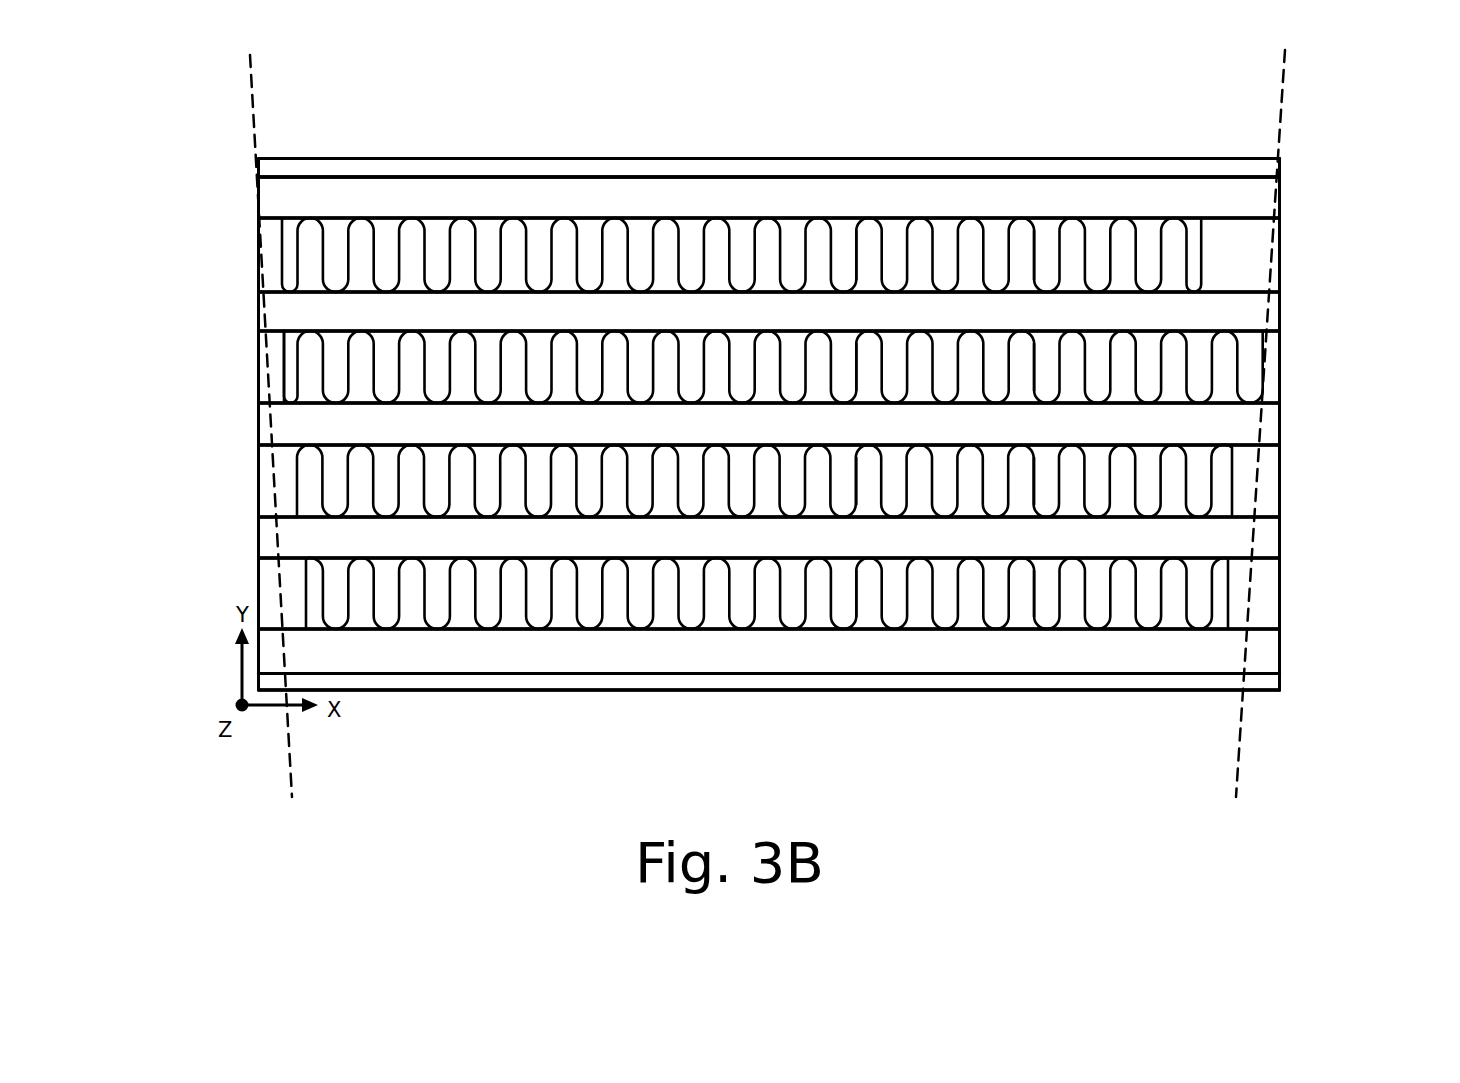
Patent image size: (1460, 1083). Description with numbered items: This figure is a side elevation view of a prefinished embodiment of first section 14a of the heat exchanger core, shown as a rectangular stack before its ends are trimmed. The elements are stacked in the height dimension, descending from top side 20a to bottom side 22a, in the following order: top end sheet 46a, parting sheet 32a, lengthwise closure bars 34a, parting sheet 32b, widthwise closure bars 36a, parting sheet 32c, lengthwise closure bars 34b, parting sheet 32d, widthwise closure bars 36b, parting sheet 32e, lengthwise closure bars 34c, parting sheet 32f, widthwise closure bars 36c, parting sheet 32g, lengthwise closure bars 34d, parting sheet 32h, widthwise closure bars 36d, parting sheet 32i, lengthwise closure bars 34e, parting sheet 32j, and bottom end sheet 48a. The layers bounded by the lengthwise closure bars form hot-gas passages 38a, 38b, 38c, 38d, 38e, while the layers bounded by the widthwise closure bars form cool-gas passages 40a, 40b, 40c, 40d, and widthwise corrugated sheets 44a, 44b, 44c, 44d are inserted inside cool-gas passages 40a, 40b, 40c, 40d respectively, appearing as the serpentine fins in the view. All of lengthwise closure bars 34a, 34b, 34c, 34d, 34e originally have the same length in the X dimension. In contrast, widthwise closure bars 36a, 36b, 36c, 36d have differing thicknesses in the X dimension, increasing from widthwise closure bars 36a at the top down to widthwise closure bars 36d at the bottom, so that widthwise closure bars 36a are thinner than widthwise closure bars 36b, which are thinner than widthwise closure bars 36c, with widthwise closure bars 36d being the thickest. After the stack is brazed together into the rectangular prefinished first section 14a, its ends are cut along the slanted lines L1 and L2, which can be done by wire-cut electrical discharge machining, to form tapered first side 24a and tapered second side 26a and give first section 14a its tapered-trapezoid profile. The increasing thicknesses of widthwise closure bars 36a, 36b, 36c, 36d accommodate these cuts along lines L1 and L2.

The first section 14a is at (235, 232).
The top side 20a is at (558, 158).
The bottom side 22a is at (715, 692).
The first side 24a is at (1280, 312).
The second side 26a is at (268, 368).
The parting sheet 32a is at (1280, 177).
The parting sheet 32b is at (1280, 220).
The parting sheet 32c is at (1280, 292).
The parting sheet 32d is at (1280, 333).
The parting sheet 32e is at (1280, 403).
The parting sheet 32f is at (1280, 445).
The parting sheet 32g is at (1280, 517).
The parting sheet 32h is at (1280, 560).
The parting sheet 32i is at (1280, 629).
The parting sheet 32j is at (1280, 673).
The lengthwise closure bars 34a is at (537, 209).
The lengthwise closure bars 34b is at (537, 323).
The lengthwise closure bars 34c is at (537, 437).
The lengthwise closure bars 34d is at (537, 550).
The lengthwise closure bars 34e is at (537, 666).
The widthwise closure bars 36a is at (270, 240).
The widthwise closure bars 36b is at (282, 350).
The widthwise closure bars 36c is at (282, 479).
The widthwise closure bars 36d is at (292, 578).
The hot-gas passage 38a is at (680, 205).
The hot-gas passage 38b is at (680, 319).
The hot-gas passage 38c is at (680, 433).
The hot-gas passage 38d is at (680, 546).
The hot-gas passage 38e is at (680, 662).
The cool-gas passage 40a is at (847, 237).
The cool-gas passage 40b is at (845, 351).
The cool-gas passage 40c is at (845, 465).
The cool-gas passage 40d is at (845, 578).
The widthwise corrugated sheet 44a is at (1035, 237).
The widthwise corrugated sheet 44b is at (1033, 351).
The widthwise corrugated sheet 44c is at (1025, 465).
The widthwise corrugated sheet 44d is at (1022, 578).
The top end sheet 46a is at (885, 168).
The bottom end sheet 48a is at (927, 680).
The line L1 is at (290, 772).
The line L2 is at (1240, 752).